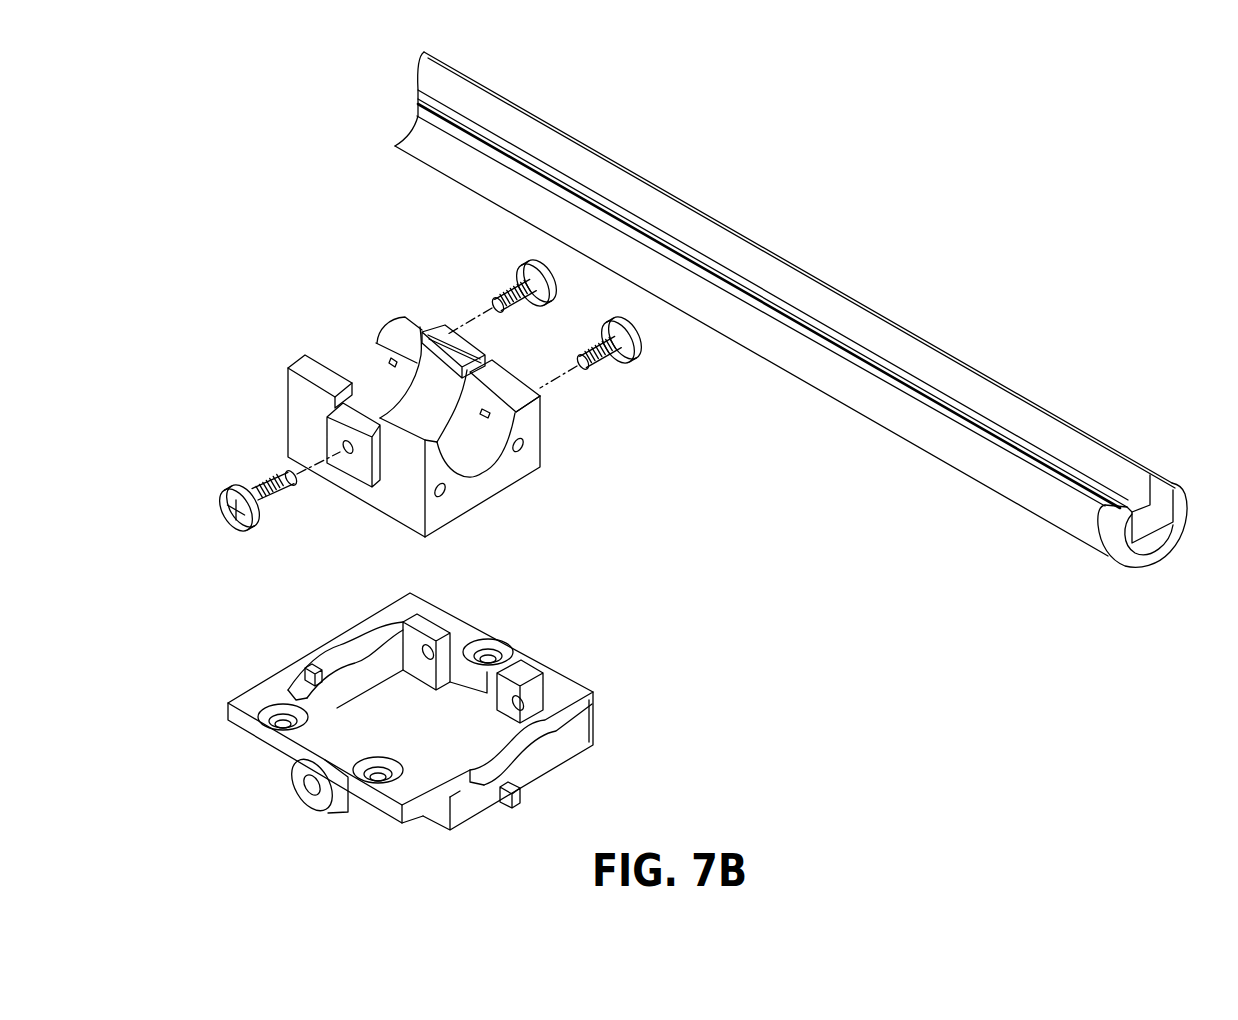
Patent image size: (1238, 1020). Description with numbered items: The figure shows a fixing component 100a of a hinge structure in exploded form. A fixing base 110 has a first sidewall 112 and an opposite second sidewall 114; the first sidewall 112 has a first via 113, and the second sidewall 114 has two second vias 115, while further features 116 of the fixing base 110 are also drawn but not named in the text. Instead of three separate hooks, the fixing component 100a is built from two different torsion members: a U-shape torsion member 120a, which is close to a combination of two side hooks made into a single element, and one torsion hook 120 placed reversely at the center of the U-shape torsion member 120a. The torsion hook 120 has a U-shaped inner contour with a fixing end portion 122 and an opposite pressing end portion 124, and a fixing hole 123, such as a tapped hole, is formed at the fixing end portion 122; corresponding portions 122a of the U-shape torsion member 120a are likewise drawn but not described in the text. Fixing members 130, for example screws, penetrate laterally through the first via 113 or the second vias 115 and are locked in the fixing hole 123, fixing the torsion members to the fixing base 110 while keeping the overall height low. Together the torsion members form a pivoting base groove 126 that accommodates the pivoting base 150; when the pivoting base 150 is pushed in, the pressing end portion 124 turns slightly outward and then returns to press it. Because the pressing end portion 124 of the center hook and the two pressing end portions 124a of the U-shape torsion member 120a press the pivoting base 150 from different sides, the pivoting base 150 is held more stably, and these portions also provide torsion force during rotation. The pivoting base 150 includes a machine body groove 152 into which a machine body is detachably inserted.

The fixing component 100a is at (1178, 838).
The fixing base 110 is at (440, 737).
The first sidewall 112 is at (373, 728).
The first via 113 is at (306, 778).
The second sidewall 114 is at (478, 640).
The second via 115 is at (514, 706).
The protrusions 116 is at (312, 668).
The torsion hook 120 is at (330, 400).
The U-shape torsion member 120a is at (330, 400).
The fixing end portion 122 is at (333, 407).
The first protrusion 122a is at (402, 315).
The fixing hole 123 is at (348, 455).
The pressing end portion 124 is at (447, 333).
The pressing end portions 124a is at (303, 352).
The pivoting base groove 126 is at (370, 388).
The fixing member 130 is at (537, 268).
The pivoting base 150 is at (880, 410).
The machine body groove 152 is at (815, 300).